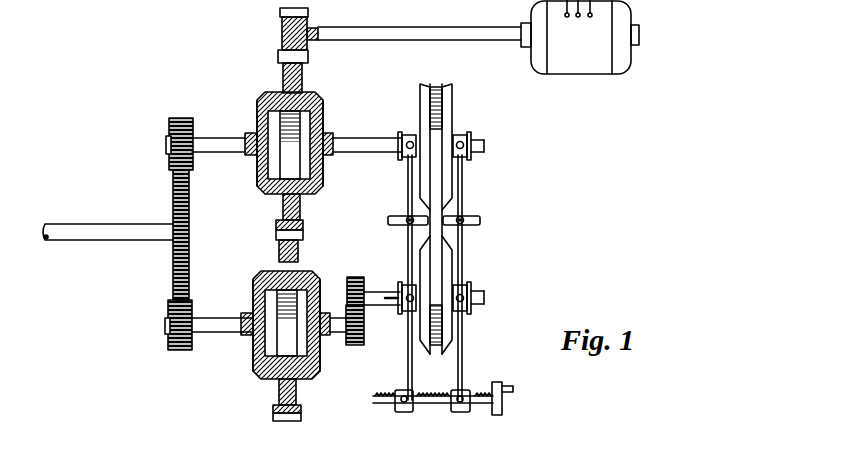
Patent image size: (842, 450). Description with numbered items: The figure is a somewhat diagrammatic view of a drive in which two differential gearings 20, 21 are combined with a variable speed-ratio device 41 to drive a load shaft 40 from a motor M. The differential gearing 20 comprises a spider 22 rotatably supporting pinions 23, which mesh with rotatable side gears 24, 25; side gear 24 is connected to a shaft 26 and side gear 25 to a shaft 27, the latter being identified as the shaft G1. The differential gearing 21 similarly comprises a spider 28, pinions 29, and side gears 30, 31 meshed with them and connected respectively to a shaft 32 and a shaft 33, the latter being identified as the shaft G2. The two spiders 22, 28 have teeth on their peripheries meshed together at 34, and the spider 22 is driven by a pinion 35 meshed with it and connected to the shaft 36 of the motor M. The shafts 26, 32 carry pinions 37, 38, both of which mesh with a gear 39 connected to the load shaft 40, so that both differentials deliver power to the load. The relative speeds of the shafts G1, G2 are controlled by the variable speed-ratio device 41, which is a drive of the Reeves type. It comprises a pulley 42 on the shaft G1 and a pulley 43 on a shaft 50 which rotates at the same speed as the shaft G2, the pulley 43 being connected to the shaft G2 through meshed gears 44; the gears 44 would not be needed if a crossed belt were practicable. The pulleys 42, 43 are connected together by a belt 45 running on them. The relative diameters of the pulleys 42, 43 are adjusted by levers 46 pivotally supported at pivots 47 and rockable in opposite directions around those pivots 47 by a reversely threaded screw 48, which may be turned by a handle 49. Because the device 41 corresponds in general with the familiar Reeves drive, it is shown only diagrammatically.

The motor M is at (580, 37).
The differential gearing 20 is at (255, 167).
The differential gearing 21 is at (248, 302).
The spider 22 is at (302, 71).
The pinions 23 is at (301, 96).
The side gear 24 is at (258, 113).
The side gear 25 is at (323, 114).
The shaft 26 is at (209, 141).
The shaft 27 is at (352, 143).
The spider 28 is at (299, 250).
The pinions 29 is at (300, 278).
The side gear 30 is at (254, 352).
The side gear 31 is at (320, 356).
The shaft 32 is at (216, 333).
The shaft 33 is at (336, 332).
The meshing of spider teeth 34 is at (303, 235).
The pinion 35 is at (282, 30).
The shaft 36 is at (436, 41).
The pinion 37 is at (169, 130).
The pinion 38 is at (168, 340).
The gear 39 is at (173, 267).
The load shaft 40 is at (100, 242).
The variable speed-ratio device 41 is at (463, 249).
The pulley 42 is at (449, 183).
The pulley 43 is at (447, 342).
The meshed gears 44 is at (365, 318).
The belt 45 is at (440, 208).
The levers 46 is at (464, 259).
The pivots 47 is at (402, 226).
The reversely threaded screw 48 is at (437, 396).
The handle 49 is at (514, 382).
The shaft 50 is at (377, 292).
The shaft G1 is at (360, 152).
The shaft G2 is at (331, 318).